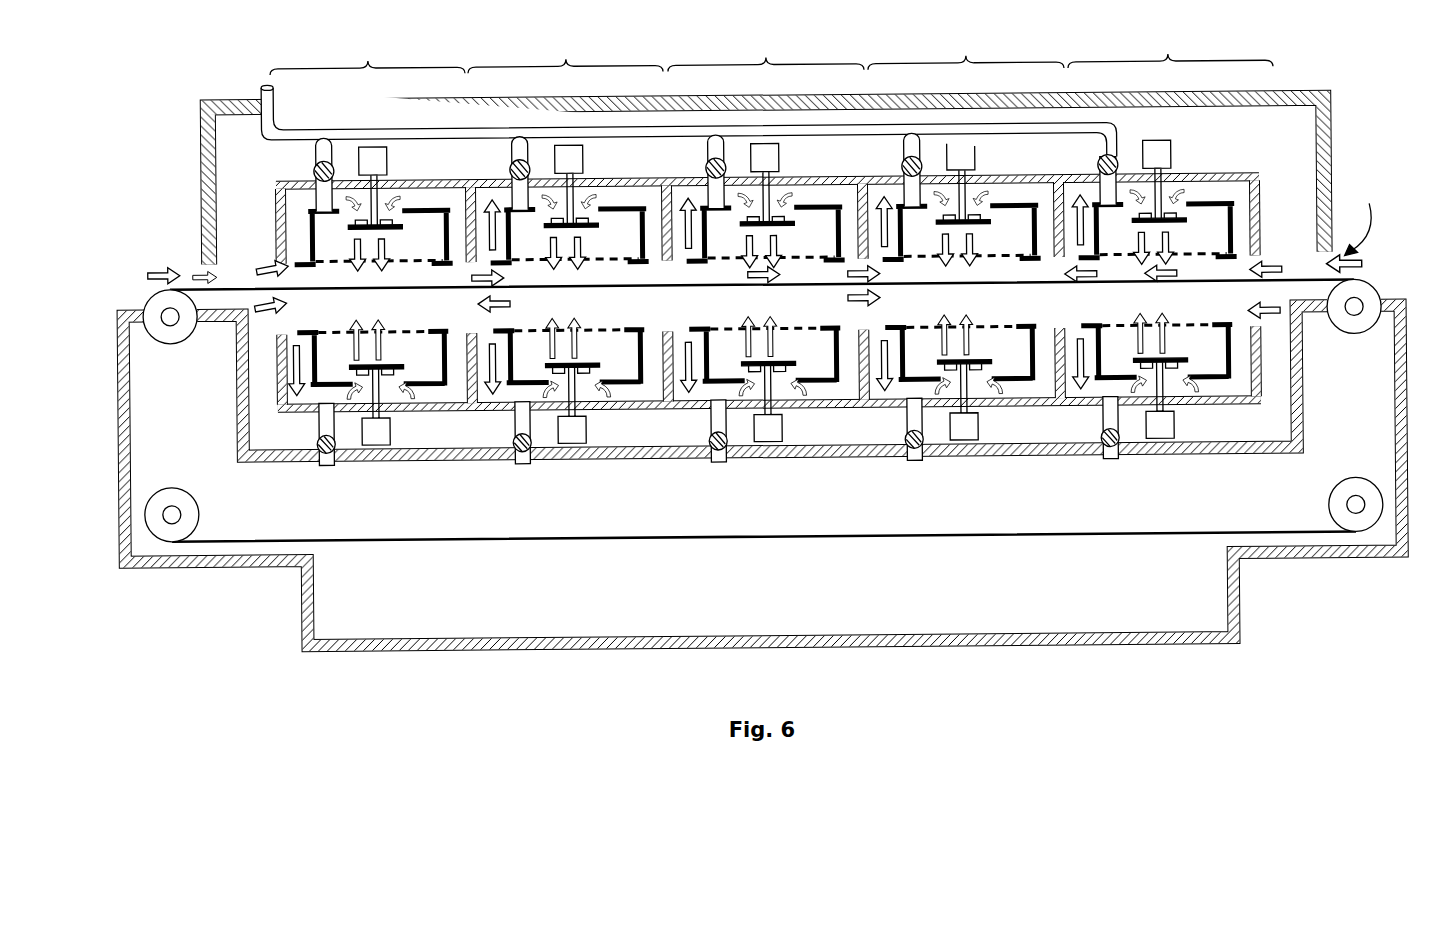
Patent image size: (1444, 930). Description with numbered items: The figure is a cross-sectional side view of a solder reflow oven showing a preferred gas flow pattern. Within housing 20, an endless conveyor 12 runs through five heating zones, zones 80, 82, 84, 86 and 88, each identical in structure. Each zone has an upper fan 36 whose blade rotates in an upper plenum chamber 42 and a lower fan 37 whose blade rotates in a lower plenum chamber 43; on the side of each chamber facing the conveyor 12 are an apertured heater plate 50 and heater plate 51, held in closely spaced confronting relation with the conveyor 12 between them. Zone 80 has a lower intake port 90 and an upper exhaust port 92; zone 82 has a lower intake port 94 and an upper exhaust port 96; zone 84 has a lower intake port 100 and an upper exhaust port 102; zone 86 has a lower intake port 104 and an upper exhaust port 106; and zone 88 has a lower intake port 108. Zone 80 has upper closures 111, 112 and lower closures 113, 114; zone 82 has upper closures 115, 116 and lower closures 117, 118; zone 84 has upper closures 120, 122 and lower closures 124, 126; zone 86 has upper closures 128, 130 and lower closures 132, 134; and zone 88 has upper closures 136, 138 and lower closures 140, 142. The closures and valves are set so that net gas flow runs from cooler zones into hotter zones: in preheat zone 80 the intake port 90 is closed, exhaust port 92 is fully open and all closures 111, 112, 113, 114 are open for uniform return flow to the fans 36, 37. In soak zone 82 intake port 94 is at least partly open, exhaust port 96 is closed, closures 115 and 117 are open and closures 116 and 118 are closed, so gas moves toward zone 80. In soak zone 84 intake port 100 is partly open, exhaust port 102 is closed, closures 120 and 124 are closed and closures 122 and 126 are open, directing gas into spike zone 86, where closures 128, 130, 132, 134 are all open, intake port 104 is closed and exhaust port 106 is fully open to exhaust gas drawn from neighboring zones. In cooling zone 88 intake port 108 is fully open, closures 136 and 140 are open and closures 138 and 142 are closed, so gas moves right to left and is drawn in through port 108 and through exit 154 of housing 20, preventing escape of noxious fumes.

The endless conveyor 12 is at (156, 286).
The housing 20 is at (114, 356).
The fan 36 is at (387, 228).
The fan 37 is at (387, 364).
The plenum chamber 42 is at (338, 245).
The plenum chamber 43 is at (342, 363).
The heater plate 50 is at (400, 262).
The heater plate 51 is at (362, 325).
The zone 80 is at (367, 52).
The zone 82 is at (565, 50).
The zone 84 is at (766, 49).
The zone 86 is at (966, 47).
The zone 88 is at (1170, 45).
The lower intake port 90 is at (329, 463).
The upper exhaust port 92 is at (315, 167).
The lower intake port 94 is at (525, 463).
The upper exhaust port 96 is at (511, 167).
The lower intake port 100 is at (1099, 167).
The upper exhaust port 102 is at (707, 167).
The lower intake port 104 is at (917, 463).
The upper exhaust port 106 is at (903, 167).
The lower intake port 108 is at (1113, 463).
The upper closure 111 is at (302, 255).
The upper closure 112 is at (457, 257).
The lower closure 113 is at (299, 329).
The lower closure 114 is at (433, 317).
The upper closure 115 is at (482, 268).
The upper closure 116 is at (653, 257).
The lower closure 117 is at (498, 329).
The lower closure 118 is at (628, 324).
The upper closure 120 is at (700, 268).
The upper closure 122 is at (849, 255).
The lower closure 124 is at (694, 329).
The lower closure 126 is at (825, 324).
The upper closure 128 is at (898, 265).
The upper closure 130 is at (1043, 256).
The lower closure 132 is at (891, 329).
The lower closure 134 is at (1020, 325).
The upper closure 136 is at (1092, 262).
The upper closure 138 is at (1239, 256).
The lower closure 140 is at (1091, 328).
The lower closure 142 is at (1224, 324).
The exit 154 is at (1366, 215).